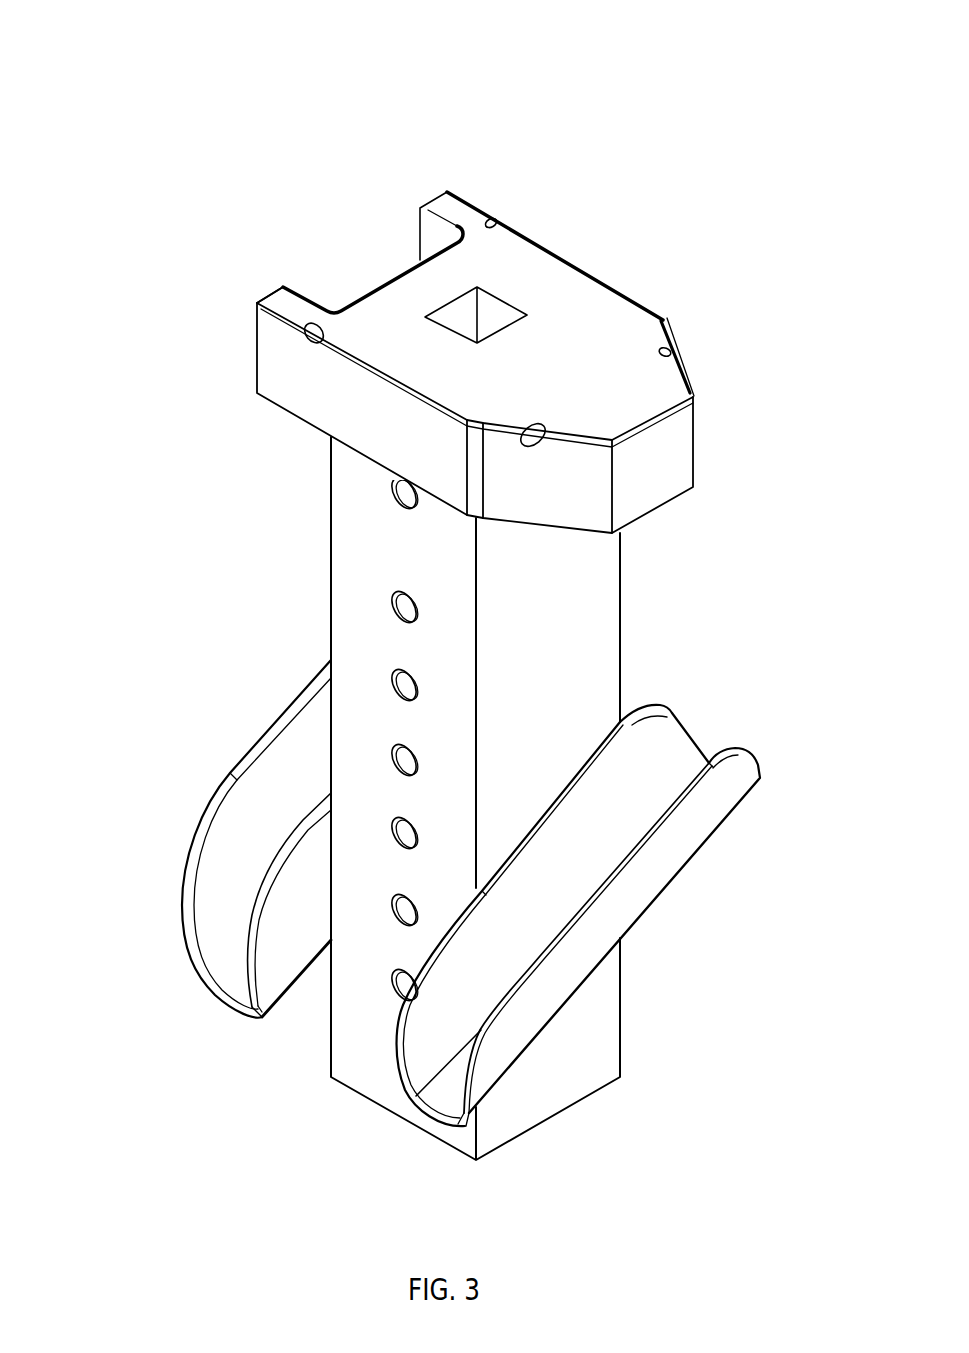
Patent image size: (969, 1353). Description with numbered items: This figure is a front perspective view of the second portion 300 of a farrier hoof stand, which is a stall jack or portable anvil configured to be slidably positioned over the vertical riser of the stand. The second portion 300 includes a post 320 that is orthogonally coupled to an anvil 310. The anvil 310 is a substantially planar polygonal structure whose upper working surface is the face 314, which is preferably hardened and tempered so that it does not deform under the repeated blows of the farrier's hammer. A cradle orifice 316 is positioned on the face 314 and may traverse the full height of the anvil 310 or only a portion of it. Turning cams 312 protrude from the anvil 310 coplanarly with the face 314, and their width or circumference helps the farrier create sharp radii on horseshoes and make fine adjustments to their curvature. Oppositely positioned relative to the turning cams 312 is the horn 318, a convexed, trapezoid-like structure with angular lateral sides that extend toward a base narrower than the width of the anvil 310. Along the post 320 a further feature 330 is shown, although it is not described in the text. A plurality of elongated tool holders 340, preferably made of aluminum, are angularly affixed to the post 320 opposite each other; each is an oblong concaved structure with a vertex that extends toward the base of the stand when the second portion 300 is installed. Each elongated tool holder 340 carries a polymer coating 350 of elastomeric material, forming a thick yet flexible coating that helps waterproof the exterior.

The second portion 300 is at (448, 581).
The anvil 310 is at (470, 340).
The turning cams 312 is at (285, 285).
The face 314 is at (592, 375).
The cradle orifice 316 is at (488, 323).
The horn 318 is at (656, 460).
The post 320 is at (528, 798).
The adjustment holes 330 is at (415, 684).
The elongated tool holders 340 is at (755, 760).
The polymer coating 350 is at (228, 925).